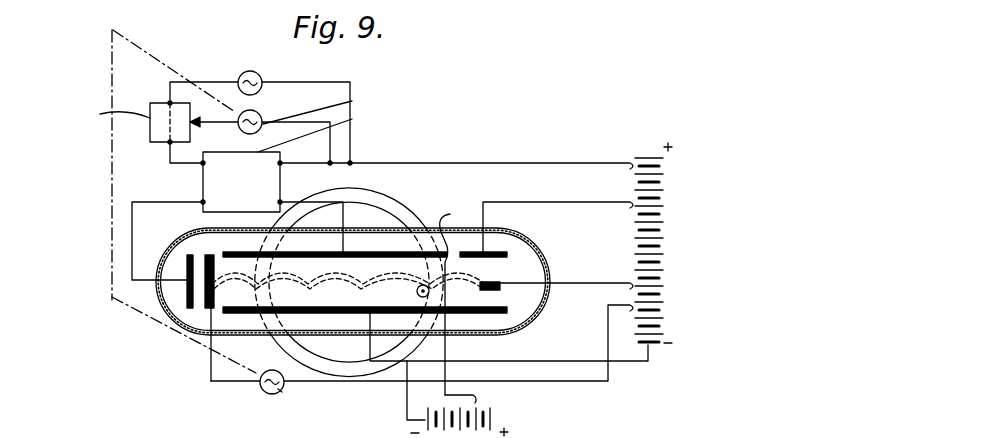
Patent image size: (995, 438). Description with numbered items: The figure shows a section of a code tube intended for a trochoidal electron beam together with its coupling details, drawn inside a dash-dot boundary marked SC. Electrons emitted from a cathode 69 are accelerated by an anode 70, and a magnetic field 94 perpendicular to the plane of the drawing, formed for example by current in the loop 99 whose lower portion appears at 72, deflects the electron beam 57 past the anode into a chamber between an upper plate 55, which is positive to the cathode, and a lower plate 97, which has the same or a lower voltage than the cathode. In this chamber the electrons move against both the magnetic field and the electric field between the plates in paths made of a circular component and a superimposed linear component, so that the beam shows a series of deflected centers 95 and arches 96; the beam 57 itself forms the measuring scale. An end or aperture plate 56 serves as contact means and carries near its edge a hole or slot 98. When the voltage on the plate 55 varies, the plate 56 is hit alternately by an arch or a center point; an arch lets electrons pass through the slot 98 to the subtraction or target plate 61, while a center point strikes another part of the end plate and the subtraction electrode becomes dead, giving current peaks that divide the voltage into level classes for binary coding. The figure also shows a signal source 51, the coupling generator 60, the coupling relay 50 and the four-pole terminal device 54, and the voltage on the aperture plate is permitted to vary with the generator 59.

The screened compartment boundary SC is at (112, 184).
The coupling relay 50 is at (158, 105).
The signal source 51 is at (240, 74).
The coupling generator 60 is at (260, 116).
The four-pole terminal device 54 is at (382, 190).
The subtraction or target plate 61 is at (165, 305).
The loop 99 is at (378, 190).
The ring coil lower portion 72 is at (318, 338).
The hole or slot 98 is at (206, 272).
The end or aperture plate 56 is at (210, 312).
The upper plate 55 is at (397, 250).
The anode 70 is at (498, 247).
The lower plate 97 is at (490, 313).
The cathode 69 is at (505, 283).
The electron beam 57 is at (456, 301).
The deflected centers 95 is at (348, 288).
The arches 96 is at (337, 293).
The magnetic field 94 is at (405, 293).
The generator 59 is at (262, 390).